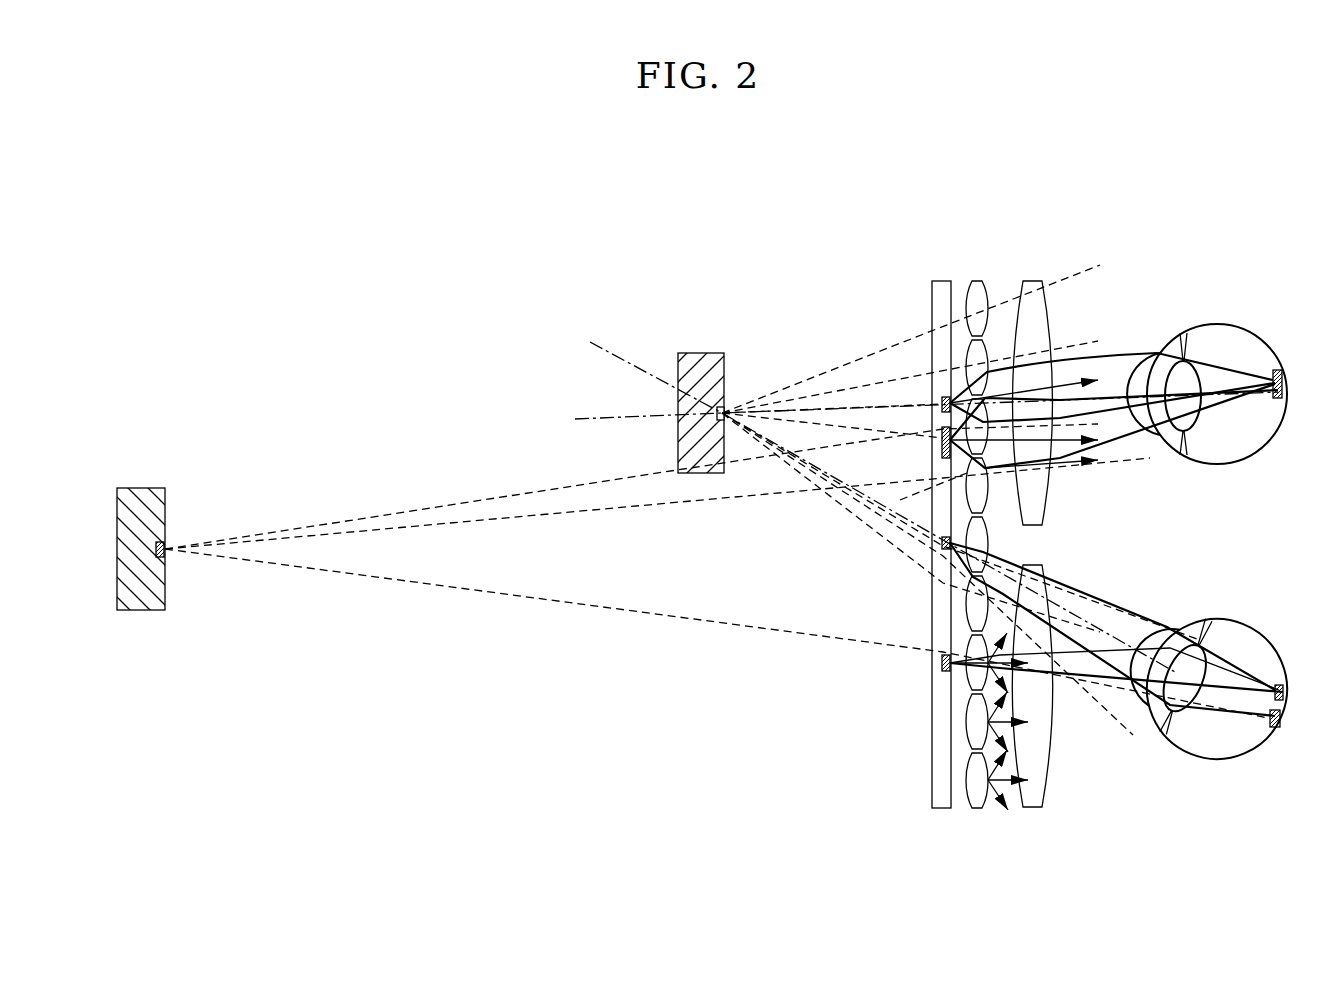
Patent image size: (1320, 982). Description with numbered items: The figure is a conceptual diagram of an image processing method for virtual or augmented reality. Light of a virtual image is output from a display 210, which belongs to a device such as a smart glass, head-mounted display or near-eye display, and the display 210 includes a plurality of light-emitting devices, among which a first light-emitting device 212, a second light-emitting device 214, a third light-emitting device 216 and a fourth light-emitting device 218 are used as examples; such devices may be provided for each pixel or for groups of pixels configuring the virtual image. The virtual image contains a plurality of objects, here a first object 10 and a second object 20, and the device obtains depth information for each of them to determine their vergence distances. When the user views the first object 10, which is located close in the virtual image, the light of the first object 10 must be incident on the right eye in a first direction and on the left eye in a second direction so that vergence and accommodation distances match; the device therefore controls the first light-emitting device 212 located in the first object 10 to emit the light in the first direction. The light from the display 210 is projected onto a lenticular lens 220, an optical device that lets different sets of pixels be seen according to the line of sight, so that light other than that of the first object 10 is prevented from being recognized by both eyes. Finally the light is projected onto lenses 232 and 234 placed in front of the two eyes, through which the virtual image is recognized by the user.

The first object 10 is at (704, 353).
The second object 20 is at (141, 488).
The display 210 is at (942, 281).
The first light-emitting device 212 is at (942, 402).
The second light-emitting device 214 is at (942, 546).
The third light-emitting device 216 is at (942, 442).
The fourth light-emitting device 218 is at (942, 663).
The lenticular lens 220 is at (977, 281).
The lens 232 is at (1032, 281).
The lens 234 is at (1032, 808).